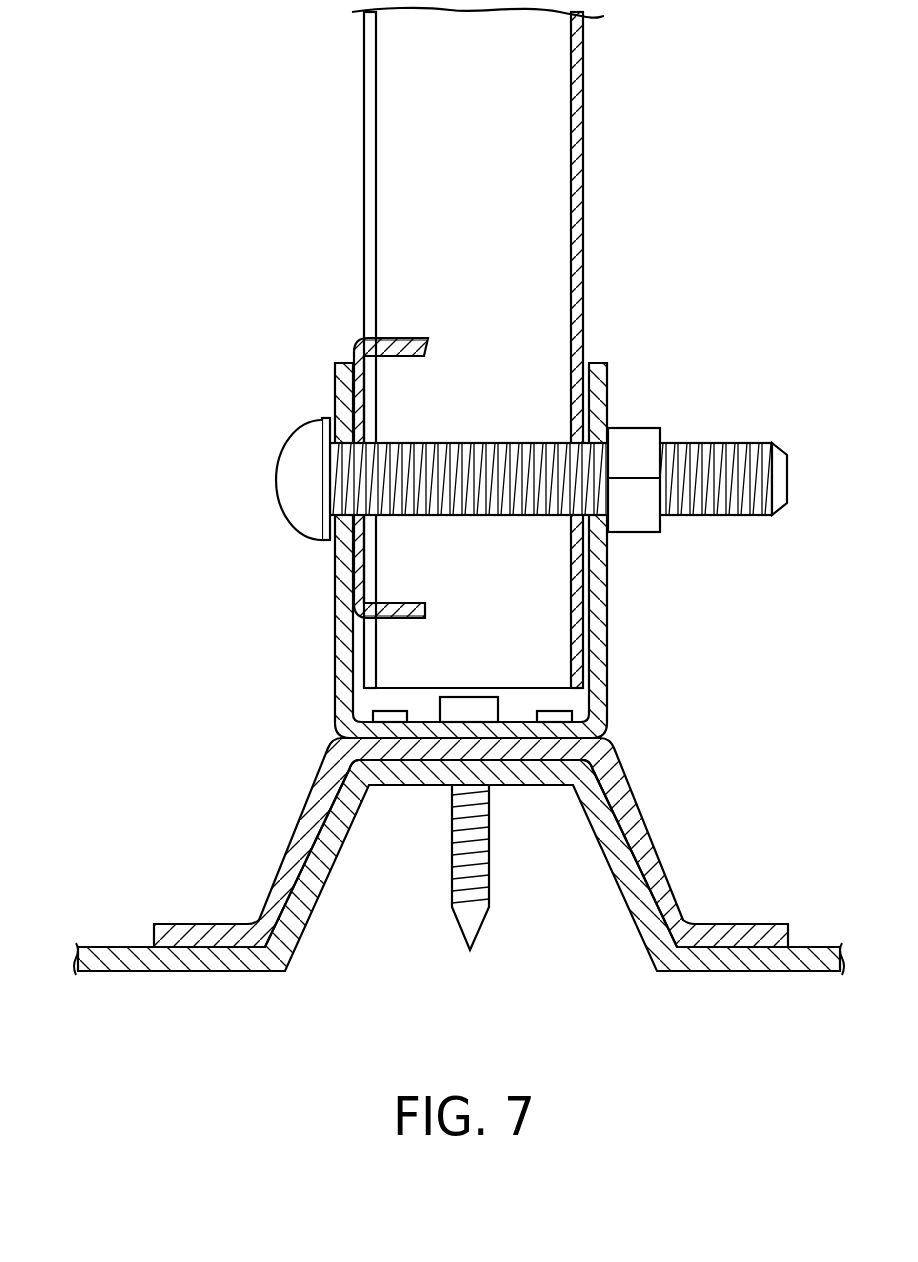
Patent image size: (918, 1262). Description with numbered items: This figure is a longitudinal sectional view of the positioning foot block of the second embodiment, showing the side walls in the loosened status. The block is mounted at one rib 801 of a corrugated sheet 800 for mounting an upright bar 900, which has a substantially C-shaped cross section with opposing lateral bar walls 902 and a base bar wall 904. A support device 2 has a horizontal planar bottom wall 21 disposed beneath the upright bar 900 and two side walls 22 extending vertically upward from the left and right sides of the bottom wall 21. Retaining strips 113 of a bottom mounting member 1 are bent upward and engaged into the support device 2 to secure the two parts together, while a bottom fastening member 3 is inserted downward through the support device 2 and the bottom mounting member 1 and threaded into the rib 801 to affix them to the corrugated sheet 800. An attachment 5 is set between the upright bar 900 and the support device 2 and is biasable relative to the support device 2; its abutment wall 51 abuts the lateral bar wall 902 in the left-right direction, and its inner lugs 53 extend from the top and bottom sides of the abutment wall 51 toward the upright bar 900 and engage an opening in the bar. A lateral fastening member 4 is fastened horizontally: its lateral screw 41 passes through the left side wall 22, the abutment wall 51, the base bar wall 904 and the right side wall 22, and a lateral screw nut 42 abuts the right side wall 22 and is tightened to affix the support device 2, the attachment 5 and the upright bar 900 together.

The bottom mounting member 1 is at (266, 866).
The support device 2 is at (483, 551).
The bottom fastening member 3 is at (463, 843).
The lateral fastening member 4 is at (475, 455).
The attachment 5 is at (326, 452).
The bottom wall 21 is at (513, 732).
The side wall 22 is at (342, 583).
The lateral screw 41 is at (293, 488).
The lateral screw nut 42 is at (648, 440).
The abutment wall 51 is at (357, 400).
The inner lug 53 is at (412, 342).
The retaining strip 113 is at (384, 716).
The corrugated sheet 800 is at (459, 916).
The rib 801 is at (307, 892).
The upright bar 900 is at (500, 348).
The lateral bar wall 902 is at (376, 72).
The base bar wall 904 is at (584, 253).